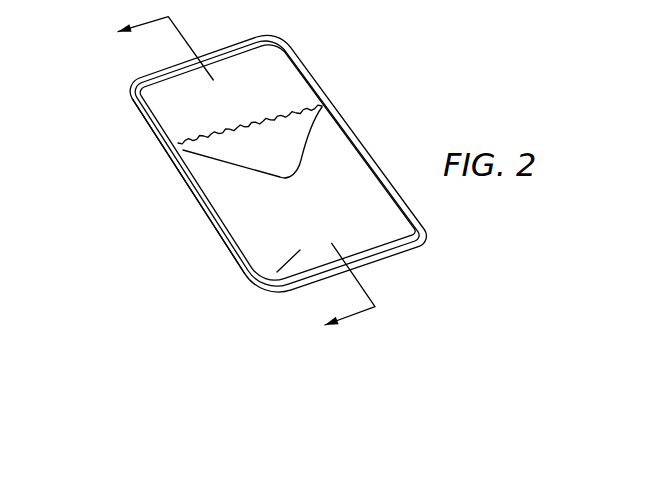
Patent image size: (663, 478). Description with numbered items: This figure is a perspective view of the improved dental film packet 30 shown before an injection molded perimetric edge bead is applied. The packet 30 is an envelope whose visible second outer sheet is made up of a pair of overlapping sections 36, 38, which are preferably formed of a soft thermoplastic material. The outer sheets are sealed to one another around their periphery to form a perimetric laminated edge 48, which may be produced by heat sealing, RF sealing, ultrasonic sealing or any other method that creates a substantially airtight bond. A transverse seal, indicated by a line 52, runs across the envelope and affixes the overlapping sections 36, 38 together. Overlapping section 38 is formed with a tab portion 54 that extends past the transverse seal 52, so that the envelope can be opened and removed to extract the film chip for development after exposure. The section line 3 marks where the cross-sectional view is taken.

The dental film packet 30 is at (333, 88).
The overlapping section 38 is at (267, 67).
The overlapping section 36 is at (262, 284).
The perimetric laminated edge 48 is at (140, 122).
The transverse seal 52 is at (232, 122).
The tab portion 54 is at (300, 158).
The section line 3- 3 is at (237, 177).